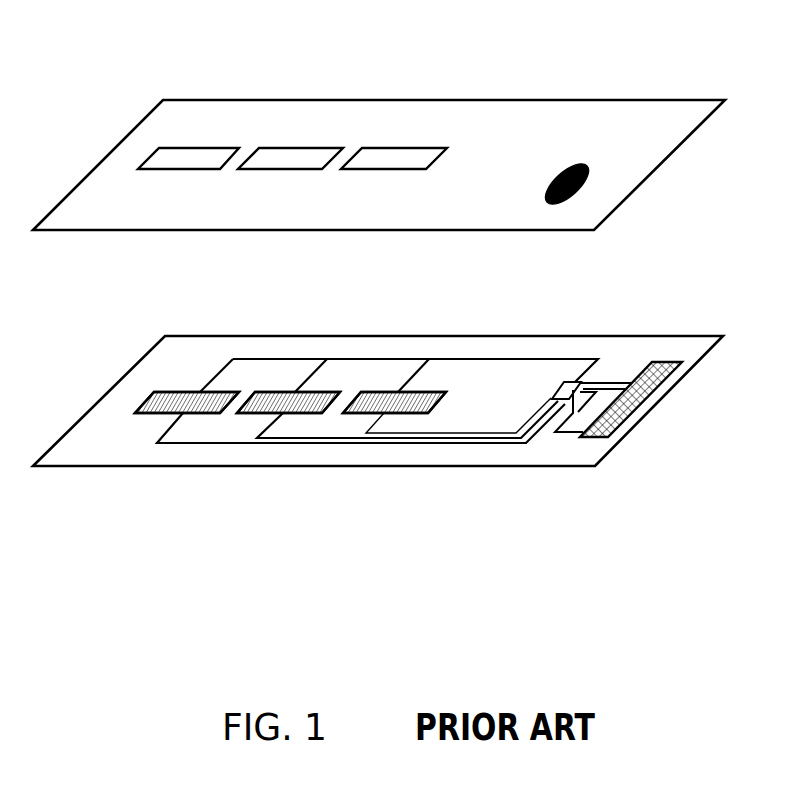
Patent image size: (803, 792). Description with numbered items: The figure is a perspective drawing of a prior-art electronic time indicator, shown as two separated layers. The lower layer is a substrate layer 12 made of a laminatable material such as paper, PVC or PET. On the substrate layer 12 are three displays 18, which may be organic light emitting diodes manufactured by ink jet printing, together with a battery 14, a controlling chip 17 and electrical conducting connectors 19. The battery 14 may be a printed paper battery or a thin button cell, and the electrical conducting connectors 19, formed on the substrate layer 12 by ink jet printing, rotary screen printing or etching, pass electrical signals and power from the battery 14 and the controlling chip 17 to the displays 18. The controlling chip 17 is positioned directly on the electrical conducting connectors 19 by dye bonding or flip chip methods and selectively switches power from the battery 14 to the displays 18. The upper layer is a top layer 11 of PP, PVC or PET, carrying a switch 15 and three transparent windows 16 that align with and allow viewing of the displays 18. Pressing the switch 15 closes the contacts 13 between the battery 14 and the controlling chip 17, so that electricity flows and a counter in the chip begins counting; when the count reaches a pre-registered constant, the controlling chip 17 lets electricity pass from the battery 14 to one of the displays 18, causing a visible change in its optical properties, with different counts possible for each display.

The top layer 11 is at (112, 152).
The substrate layer 12 is at (97, 400).
The contacts 13 is at (568, 420).
The battery 14 is at (645, 398).
The switch 15 is at (583, 186).
The transparent windows 16 is at (200, 148).
The controlling chip 17 is at (565, 382).
The displays 18 is at (370, 413).
The electrical conducting connectors 19 is at (452, 447).